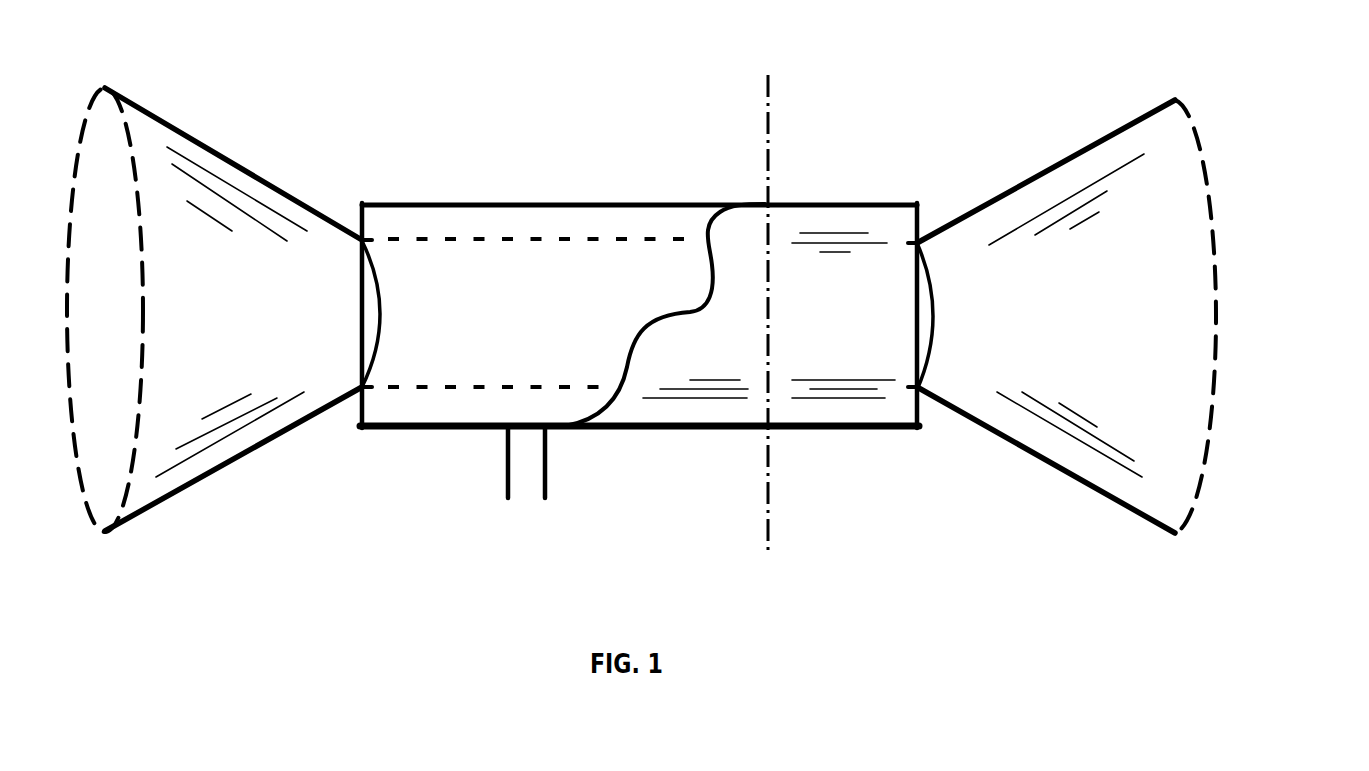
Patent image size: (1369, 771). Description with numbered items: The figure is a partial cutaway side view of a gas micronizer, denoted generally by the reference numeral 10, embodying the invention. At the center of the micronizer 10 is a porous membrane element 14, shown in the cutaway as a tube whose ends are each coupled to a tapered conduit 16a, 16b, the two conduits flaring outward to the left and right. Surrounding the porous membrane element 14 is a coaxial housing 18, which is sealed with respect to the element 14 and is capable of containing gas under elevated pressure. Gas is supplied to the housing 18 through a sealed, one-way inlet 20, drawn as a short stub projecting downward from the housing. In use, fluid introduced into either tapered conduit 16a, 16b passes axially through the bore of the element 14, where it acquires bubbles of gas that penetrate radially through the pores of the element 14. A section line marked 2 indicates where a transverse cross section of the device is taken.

The gas micronizer 10 is at (1264, 126).
The porous membrane element 14 is at (423, 239).
The tapered conduit 16a is at (283, 192).
The tapered conduit 16b is at (1037, 176).
The coaxial housing 18 is at (590, 203).
The one-way inlet 20 is at (528, 475).
The section line 2- 2 is at (768, 75).